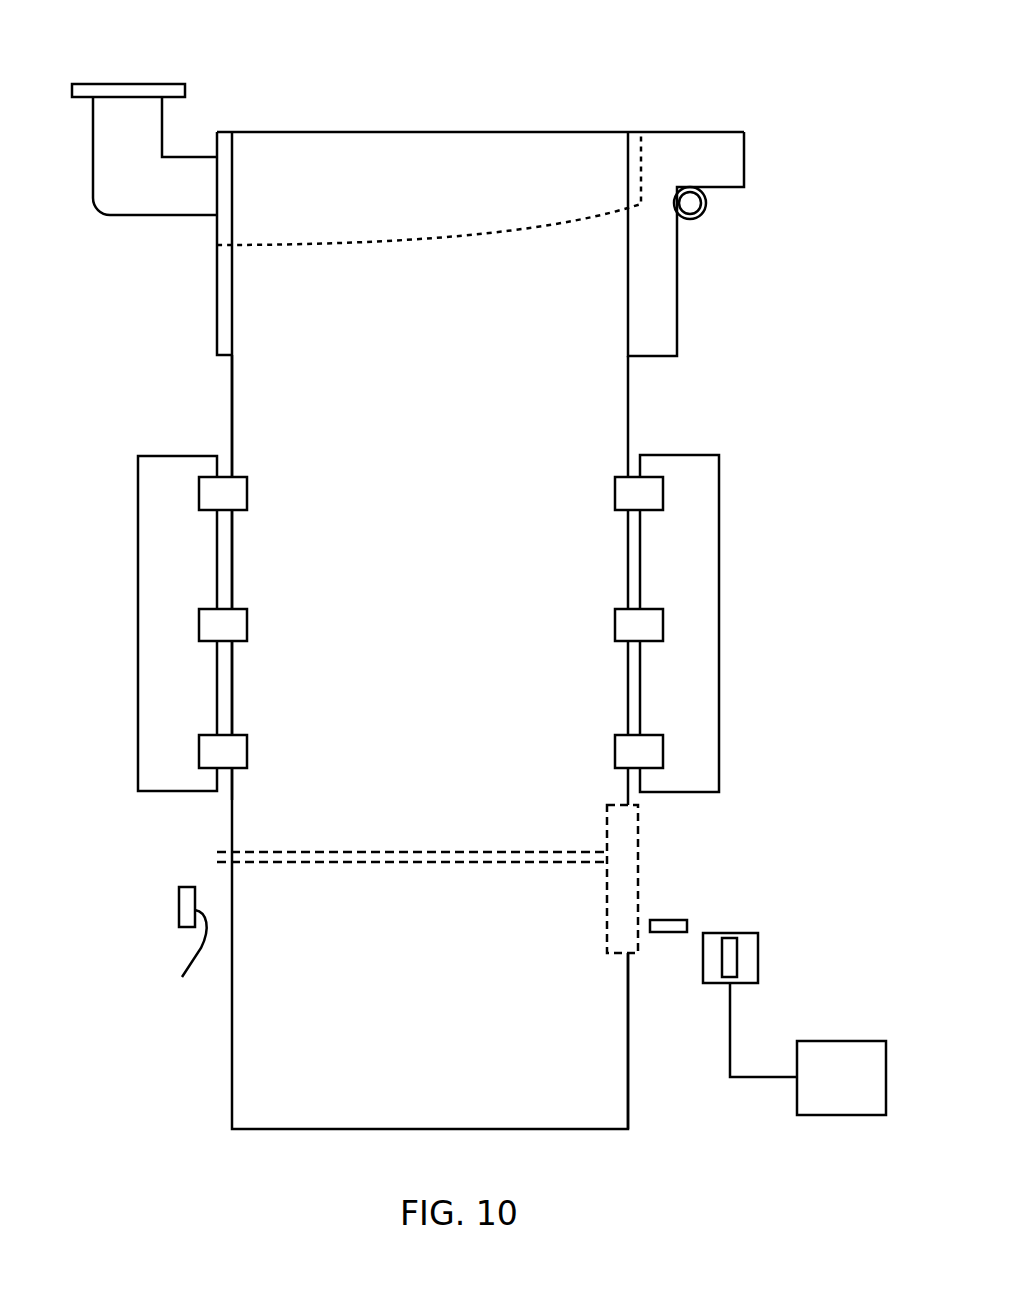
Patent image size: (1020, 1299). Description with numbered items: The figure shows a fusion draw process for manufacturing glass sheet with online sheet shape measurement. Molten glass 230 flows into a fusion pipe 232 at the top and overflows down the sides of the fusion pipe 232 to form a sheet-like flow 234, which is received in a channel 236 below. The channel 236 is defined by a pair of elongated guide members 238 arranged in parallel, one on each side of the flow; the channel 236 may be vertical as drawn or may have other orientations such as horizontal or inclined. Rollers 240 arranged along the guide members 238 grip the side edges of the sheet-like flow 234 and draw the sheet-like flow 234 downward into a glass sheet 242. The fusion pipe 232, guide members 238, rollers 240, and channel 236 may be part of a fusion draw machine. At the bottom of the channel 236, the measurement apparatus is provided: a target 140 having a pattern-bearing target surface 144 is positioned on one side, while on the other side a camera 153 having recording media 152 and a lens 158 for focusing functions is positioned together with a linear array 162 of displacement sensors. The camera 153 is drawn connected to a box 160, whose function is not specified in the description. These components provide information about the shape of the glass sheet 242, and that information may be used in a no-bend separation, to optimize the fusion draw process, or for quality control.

The molten glass 230 is at (126, 72).
The fusion pipe 232 is at (668, 130).
The sheet-like flow 234 is at (629, 418).
The channel 236 is at (218, 468).
The guide members 238 is at (148, 453).
The rollers 240 is at (208, 753).
The target 140 is at (190, 885).
The pattern-bearing target surface 144 is at (187, 959).
The lens 158 is at (668, 925).
The camera 153 is at (728, 933).
The recording media 152 is at (727, 955).
The controller 160 is at (840, 1040).
The linear array of displacement sensors 162 is at (625, 933).
The glass sheet 242 is at (628, 1052).